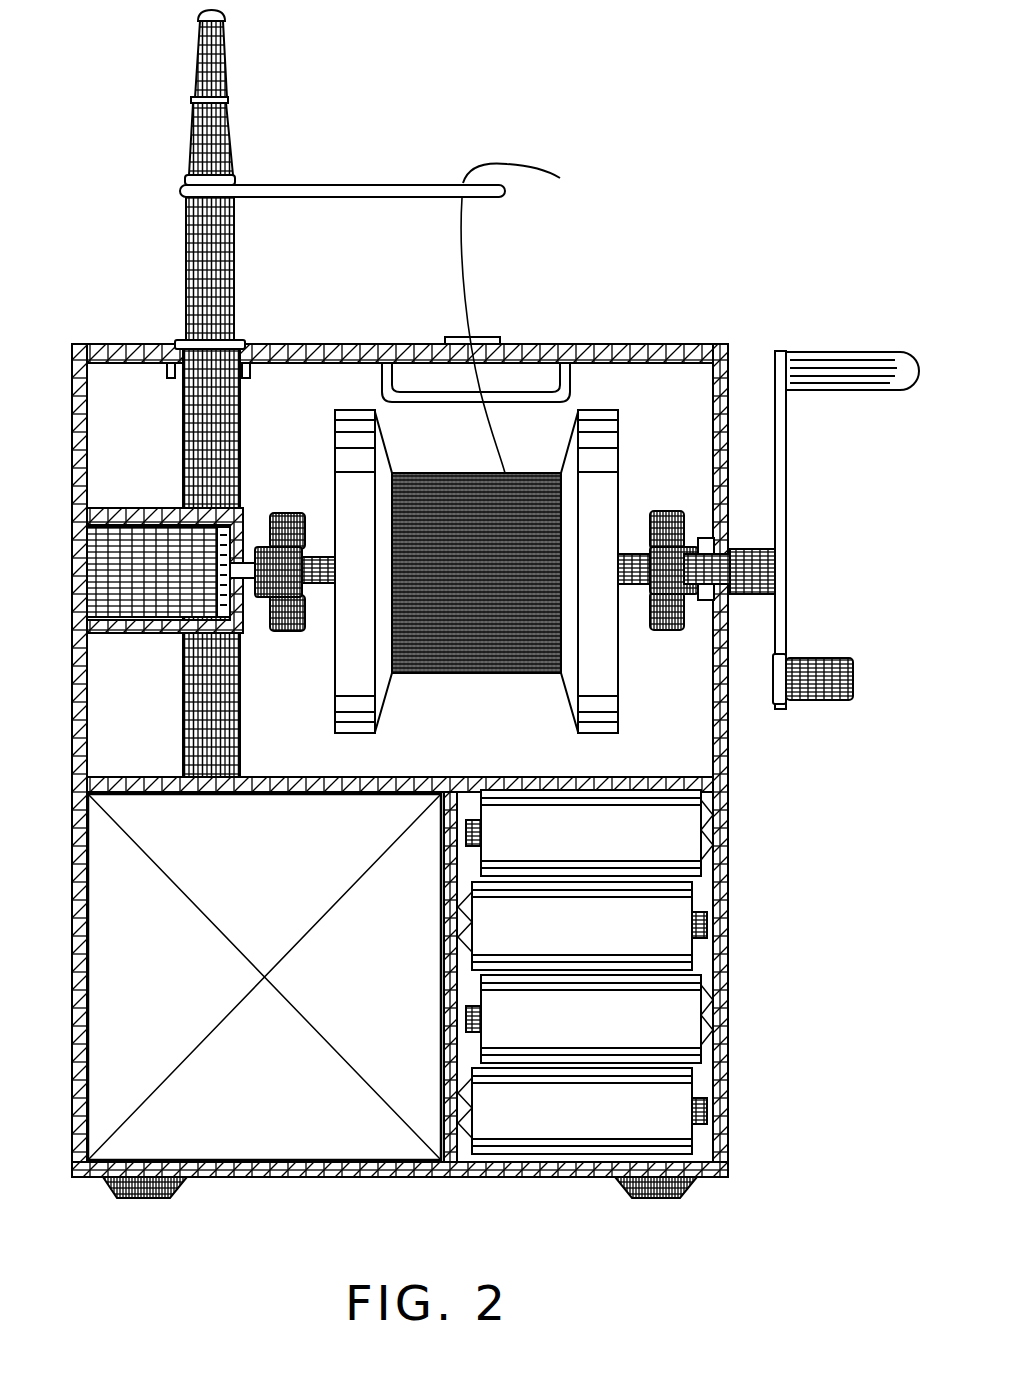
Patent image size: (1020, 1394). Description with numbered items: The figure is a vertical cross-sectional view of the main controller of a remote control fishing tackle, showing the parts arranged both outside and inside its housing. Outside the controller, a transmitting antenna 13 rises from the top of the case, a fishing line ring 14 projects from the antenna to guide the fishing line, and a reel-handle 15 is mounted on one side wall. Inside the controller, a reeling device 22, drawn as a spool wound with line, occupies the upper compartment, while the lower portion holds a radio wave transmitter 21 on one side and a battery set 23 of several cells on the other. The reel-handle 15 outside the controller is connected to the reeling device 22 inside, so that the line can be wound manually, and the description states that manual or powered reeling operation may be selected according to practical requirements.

The transmitting antenna 13 is at (226, 33).
The fishing line ring 14 is at (367, 183).
The reel-handle 15 is at (832, 351).
The radio wave transmitter 21 is at (316, 1137).
The reeling device 22 is at (600, 408).
The battery set 23 is at (561, 1128).